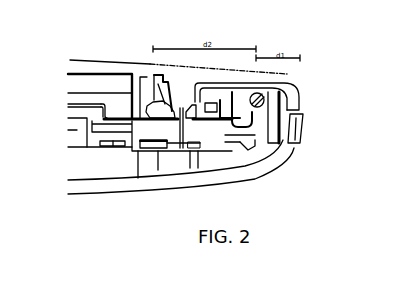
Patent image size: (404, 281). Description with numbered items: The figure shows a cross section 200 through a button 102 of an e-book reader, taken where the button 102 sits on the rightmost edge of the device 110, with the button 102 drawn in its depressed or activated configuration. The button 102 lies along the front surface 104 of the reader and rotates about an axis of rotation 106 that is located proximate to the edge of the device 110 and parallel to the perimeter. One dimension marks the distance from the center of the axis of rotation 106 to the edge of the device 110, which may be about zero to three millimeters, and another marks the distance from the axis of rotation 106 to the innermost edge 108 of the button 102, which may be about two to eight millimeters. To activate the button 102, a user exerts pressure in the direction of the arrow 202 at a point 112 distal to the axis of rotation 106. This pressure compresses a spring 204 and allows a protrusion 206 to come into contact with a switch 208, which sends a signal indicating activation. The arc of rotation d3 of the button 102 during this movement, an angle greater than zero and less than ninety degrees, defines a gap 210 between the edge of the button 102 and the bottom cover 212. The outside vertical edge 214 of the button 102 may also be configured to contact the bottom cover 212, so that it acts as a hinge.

The button 102 is at (275, 80).
The front surface 104 is at (106, 64).
The axis of rotation 106 is at (253, 98).
The innermost edge 108 is at (163, 107).
The edge of the device 110 is at (301, 114).
The point 112 is at (175, 83).
The cross section 200 is at (321, 24).
The arrow 202 is at (179, 25).
The spring 204 is at (179, 120).
The protrusion 206 is at (183, 118).
The switch 208 is at (204, 112).
The gap 210 is at (290, 112).
The bottom cover 212 is at (281, 152).
The outside vertical edge 214 is at (301, 101).
The arc of rotation d3 is at (152, 63).